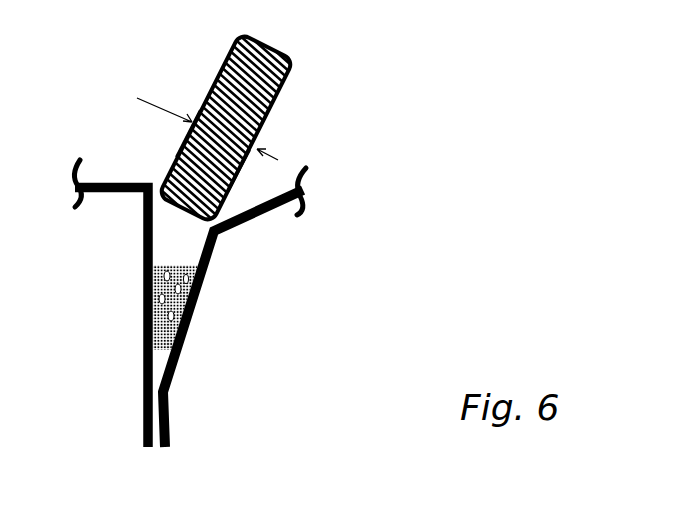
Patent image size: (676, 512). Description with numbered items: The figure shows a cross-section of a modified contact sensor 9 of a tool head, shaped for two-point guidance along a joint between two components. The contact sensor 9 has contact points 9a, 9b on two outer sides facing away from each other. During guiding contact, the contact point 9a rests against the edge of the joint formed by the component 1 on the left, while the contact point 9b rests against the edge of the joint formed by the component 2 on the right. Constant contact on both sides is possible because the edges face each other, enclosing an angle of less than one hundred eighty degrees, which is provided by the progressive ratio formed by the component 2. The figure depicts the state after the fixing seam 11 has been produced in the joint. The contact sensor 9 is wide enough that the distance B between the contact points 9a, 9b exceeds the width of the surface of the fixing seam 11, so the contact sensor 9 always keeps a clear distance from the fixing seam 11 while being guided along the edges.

The component 1 is at (102, 190).
The component 2 is at (271, 208).
The contact sensor 9 is at (282, 85).
The contact point 9a is at (172, 161).
The contact point 9b is at (232, 186).
The fixing seam 11 is at (196, 307).
The distance B is at (277, 143).